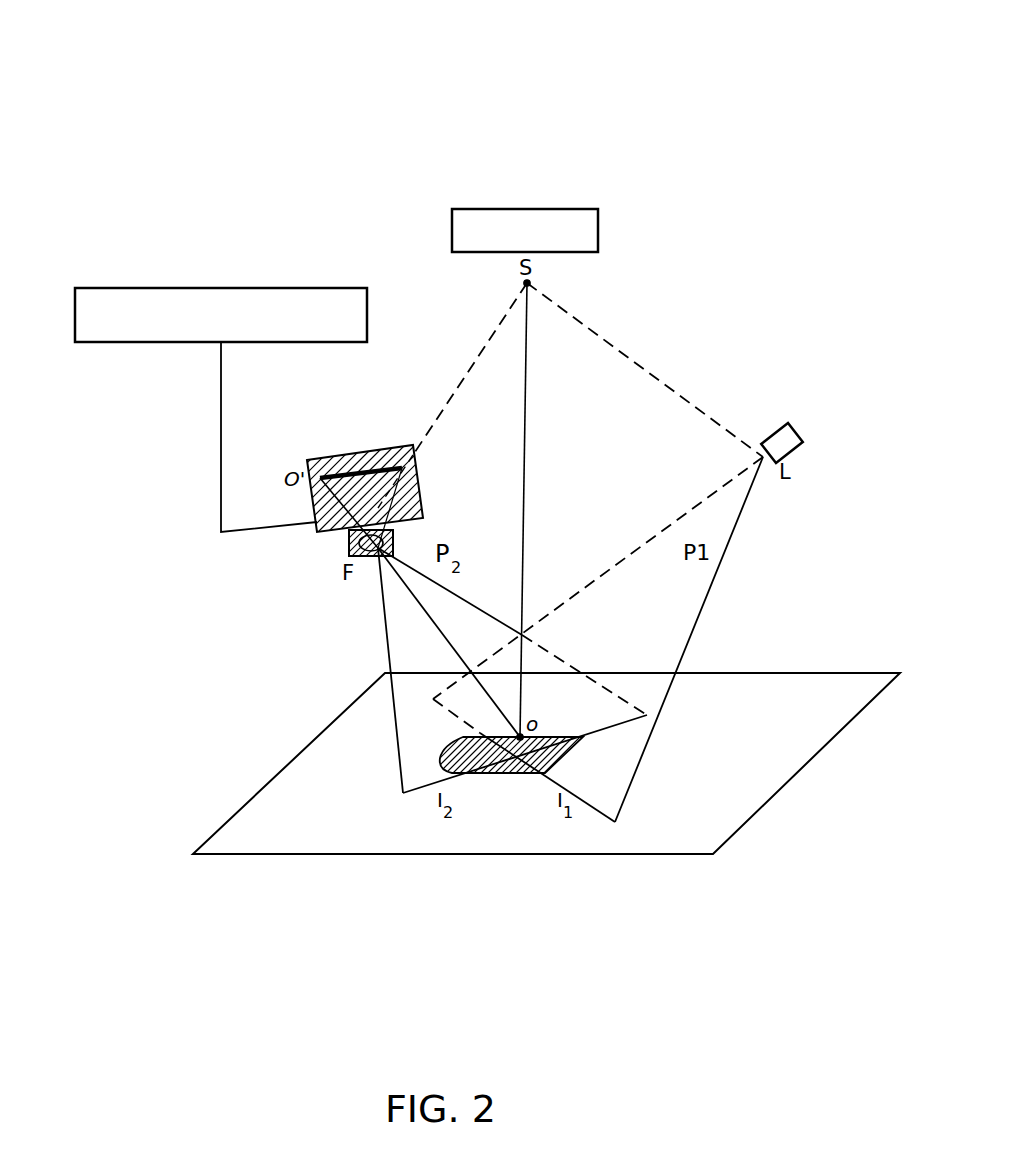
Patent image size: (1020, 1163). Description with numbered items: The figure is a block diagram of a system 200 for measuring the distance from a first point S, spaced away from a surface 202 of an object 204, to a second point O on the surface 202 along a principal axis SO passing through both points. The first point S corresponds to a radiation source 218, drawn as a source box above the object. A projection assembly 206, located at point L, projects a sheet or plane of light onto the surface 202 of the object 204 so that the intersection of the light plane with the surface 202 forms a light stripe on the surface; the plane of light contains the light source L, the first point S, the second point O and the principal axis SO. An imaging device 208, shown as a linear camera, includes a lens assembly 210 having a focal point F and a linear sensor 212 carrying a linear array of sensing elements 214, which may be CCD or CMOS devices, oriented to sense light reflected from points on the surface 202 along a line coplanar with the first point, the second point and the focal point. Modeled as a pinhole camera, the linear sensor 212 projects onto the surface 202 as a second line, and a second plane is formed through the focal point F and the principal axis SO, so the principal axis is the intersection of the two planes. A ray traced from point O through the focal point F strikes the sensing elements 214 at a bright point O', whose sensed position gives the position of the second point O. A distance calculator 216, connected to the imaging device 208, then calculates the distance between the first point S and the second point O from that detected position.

The system 200 is at (464, 118).
The surface 202 is at (558, 737).
The object 204 is at (577, 741).
The projection assembly 206 is at (798, 430).
The imaging device 208 is at (317, 537).
The lens assembly 210 is at (347, 543).
The linear sensor 212 is at (430, 433).
The sensing elements 214 is at (402, 483).
The distance calculator 216 is at (75, 300).
The radiation source 218 is at (600, 225).